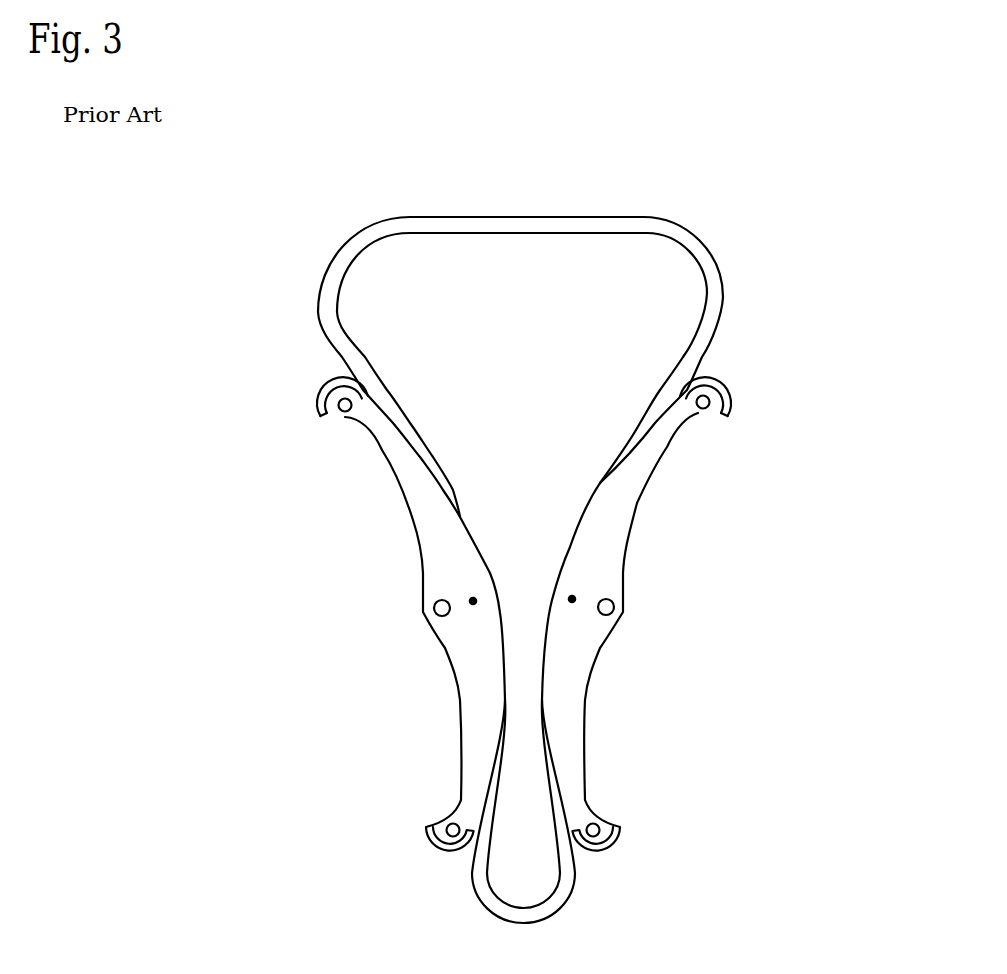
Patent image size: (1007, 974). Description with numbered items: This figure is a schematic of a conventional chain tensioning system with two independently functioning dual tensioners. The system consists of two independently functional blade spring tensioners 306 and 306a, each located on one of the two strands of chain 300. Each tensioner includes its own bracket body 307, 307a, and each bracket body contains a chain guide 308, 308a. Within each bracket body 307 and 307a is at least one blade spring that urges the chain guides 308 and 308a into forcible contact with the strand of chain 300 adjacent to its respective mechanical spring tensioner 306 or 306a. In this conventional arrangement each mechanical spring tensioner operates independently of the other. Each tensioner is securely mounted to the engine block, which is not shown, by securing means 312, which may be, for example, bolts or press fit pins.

The chain 300 is at (715, 297).
The bracket body 307a is at (427, 505).
The bracket body 307 is at (623, 495).
The blade spring tensioner 306a is at (402, 591).
The blade spring tensioner 306 is at (641, 588).
The chain guide 308a is at (322, 394).
The chain guide 308 is at (718, 378).
The securing means 312 is at (340, 411).